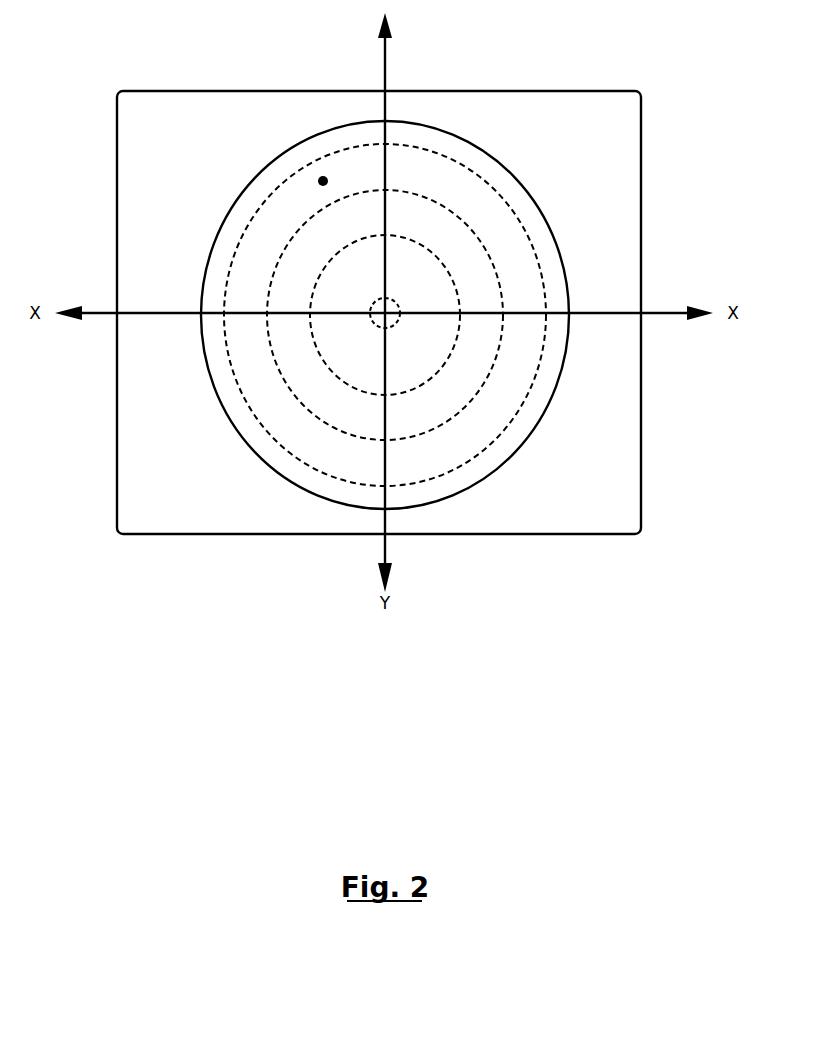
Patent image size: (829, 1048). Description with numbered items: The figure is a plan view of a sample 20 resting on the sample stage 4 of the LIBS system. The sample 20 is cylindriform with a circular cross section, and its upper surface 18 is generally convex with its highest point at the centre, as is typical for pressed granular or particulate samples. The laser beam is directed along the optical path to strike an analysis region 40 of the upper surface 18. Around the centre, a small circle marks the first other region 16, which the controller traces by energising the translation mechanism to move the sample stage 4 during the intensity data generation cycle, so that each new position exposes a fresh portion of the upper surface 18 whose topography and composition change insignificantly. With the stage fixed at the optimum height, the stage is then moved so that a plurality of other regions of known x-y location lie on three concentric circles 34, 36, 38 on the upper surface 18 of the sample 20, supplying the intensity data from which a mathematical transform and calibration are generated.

The sample stage 4 is at (175, 535).
The first other region 16 is at (397, 308).
The upper surface 18 is at (237, 407).
The sample 20 is at (541, 462).
The circle 34 is at (353, 390).
The circle 36 is at (463, 227).
The circle 38 is at (243, 230).
The analysis region 40 is at (323, 176).